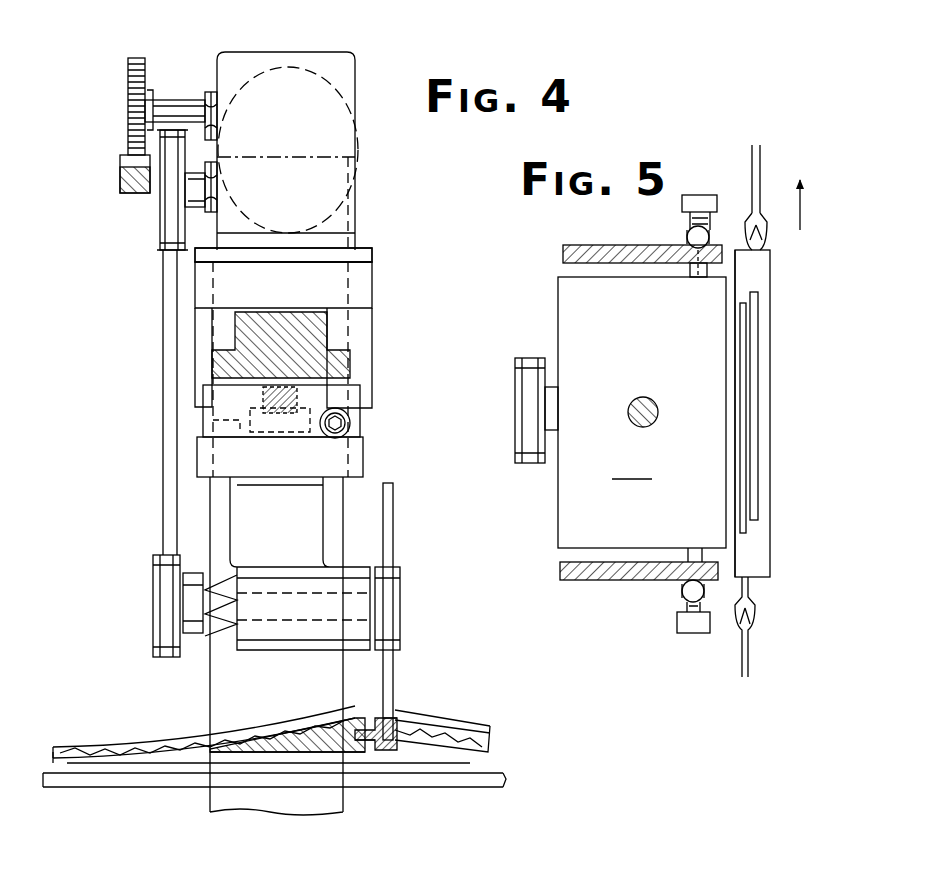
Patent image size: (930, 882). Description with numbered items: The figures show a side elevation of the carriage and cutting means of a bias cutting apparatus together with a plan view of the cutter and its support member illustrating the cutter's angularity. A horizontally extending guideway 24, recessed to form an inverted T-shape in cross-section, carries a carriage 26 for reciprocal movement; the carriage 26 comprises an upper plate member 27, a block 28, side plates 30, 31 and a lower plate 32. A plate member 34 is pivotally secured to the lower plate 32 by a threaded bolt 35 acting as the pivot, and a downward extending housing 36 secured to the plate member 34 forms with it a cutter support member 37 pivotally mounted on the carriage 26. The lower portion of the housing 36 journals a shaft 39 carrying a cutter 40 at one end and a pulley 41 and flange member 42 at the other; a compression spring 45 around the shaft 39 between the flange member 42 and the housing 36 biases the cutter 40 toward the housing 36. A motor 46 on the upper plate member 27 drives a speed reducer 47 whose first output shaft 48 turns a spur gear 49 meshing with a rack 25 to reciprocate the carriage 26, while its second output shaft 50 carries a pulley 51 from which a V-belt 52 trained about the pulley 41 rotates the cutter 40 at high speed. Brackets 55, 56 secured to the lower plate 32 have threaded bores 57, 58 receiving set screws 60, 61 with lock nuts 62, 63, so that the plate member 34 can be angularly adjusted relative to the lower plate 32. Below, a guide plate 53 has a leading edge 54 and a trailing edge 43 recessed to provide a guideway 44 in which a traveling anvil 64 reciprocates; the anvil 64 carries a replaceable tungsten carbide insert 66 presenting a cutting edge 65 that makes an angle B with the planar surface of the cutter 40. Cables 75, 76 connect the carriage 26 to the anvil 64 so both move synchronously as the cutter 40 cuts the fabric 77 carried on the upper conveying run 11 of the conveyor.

In FIG. 4, the upper conveying run 11 is at (470, 775).
In FIG. 4, the guideway 24 is at (262, 345).
In FIG. 4, the rack 25 is at (125, 165).
In FIG. 4, the carriage 26 is at (395, 222).
In FIG. 4, the upper plate member 27 is at (372, 256).
In FIG. 4, the block 28 is at (358, 284).
In FIG. 4, the side plate 30 is at (200, 323).
In FIG. 4, the side plate 31 is at (367, 327).
In FIG. 4, the lower plate 32 is at (205, 412).
In FIG. 4, the plate member 34 is at (205, 410).
In FIG. 5, the plate member 34 is at (642, 412).
In FIG. 4, the threaded bolt 35 is at (295, 413).
In FIG. 5, the threaded bolt 35 is at (655, 400).
In FIG. 4, the housing 36 is at (205, 461).
In FIG. 4, the cutter support member 37 is at (215, 672).
In FIG. 4, the shaft 39 is at (183, 600).
In FIG. 4, the cutter 40 is at (396, 490).
In FIG. 5, the cutter 40 is at (770, 325).
In FIG. 4, the pulley 41 is at (160, 640).
In FIG. 5, the pulley 41 is at (520, 440).
In FIG. 4, the flange member 42 is at (185, 617).
In FIG. 4, the trailing edge 43 is at (395, 725).
In FIG. 4, the guideway 44 is at (378, 748).
In FIG. 4, the compression spring 45 is at (205, 556).
In FIG. 4, the motor 46 is at (359, 150).
In FIG. 4, the speed reducer 47 is at (343, 55).
In FIG. 4, the first output shaft 48 is at (186, 108).
In FIG. 4, the spur gear 49 is at (130, 70).
In FIG. 4, the second output shaft 50 is at (195, 190).
In FIG. 4, the pulley 51 is at (162, 228).
In FIG. 4, the V-belt 52 is at (165, 272).
In FIG. 5, the V-belt 52 is at (525, 365).
In FIG. 4, the guide plate 53 is at (320, 735).
In FIG. 4, the leading edge 54 is at (212, 752).
In FIG. 5, the bracket 55 is at (562, 570).
In FIG. 4, the bracket 56 is at (240, 420).
In FIG. 5, the bracket 56 is at (565, 256).
In FIG. 5, the threaded bore 57 is at (695, 548).
In FIG. 5, the threaded bore 58 is at (700, 278).
In FIG. 4, the set screw 60 is at (352, 423).
In FIG. 5, the set screw 60 is at (700, 200).
In FIG. 5, the set screw 61 is at (690, 625).
In FIG. 5, the lock nut 62 is at (682, 590).
In FIG. 5, the lock nut 63 is at (690, 240).
In FIG. 4, the anvil 64 is at (398, 748).
In FIG. 5, the anvil 64 is at (770, 270).
In FIG. 4, the cutting edge 65 is at (383, 725).
In FIG. 5, the cutting edge 65 is at (745, 490).
In FIG. 4, the tungsten carbide insert 66 is at (430, 718).
In FIG. 5, the tungsten carbide insert 66 is at (745, 515).
In FIG. 5, the cable 75 is at (748, 652).
In FIG. 5, the cable 76 is at (760, 165).
In FIG. 4, the fabric 77 is at (100, 745).
In FIG. 5, the angle B is at (712, 497).